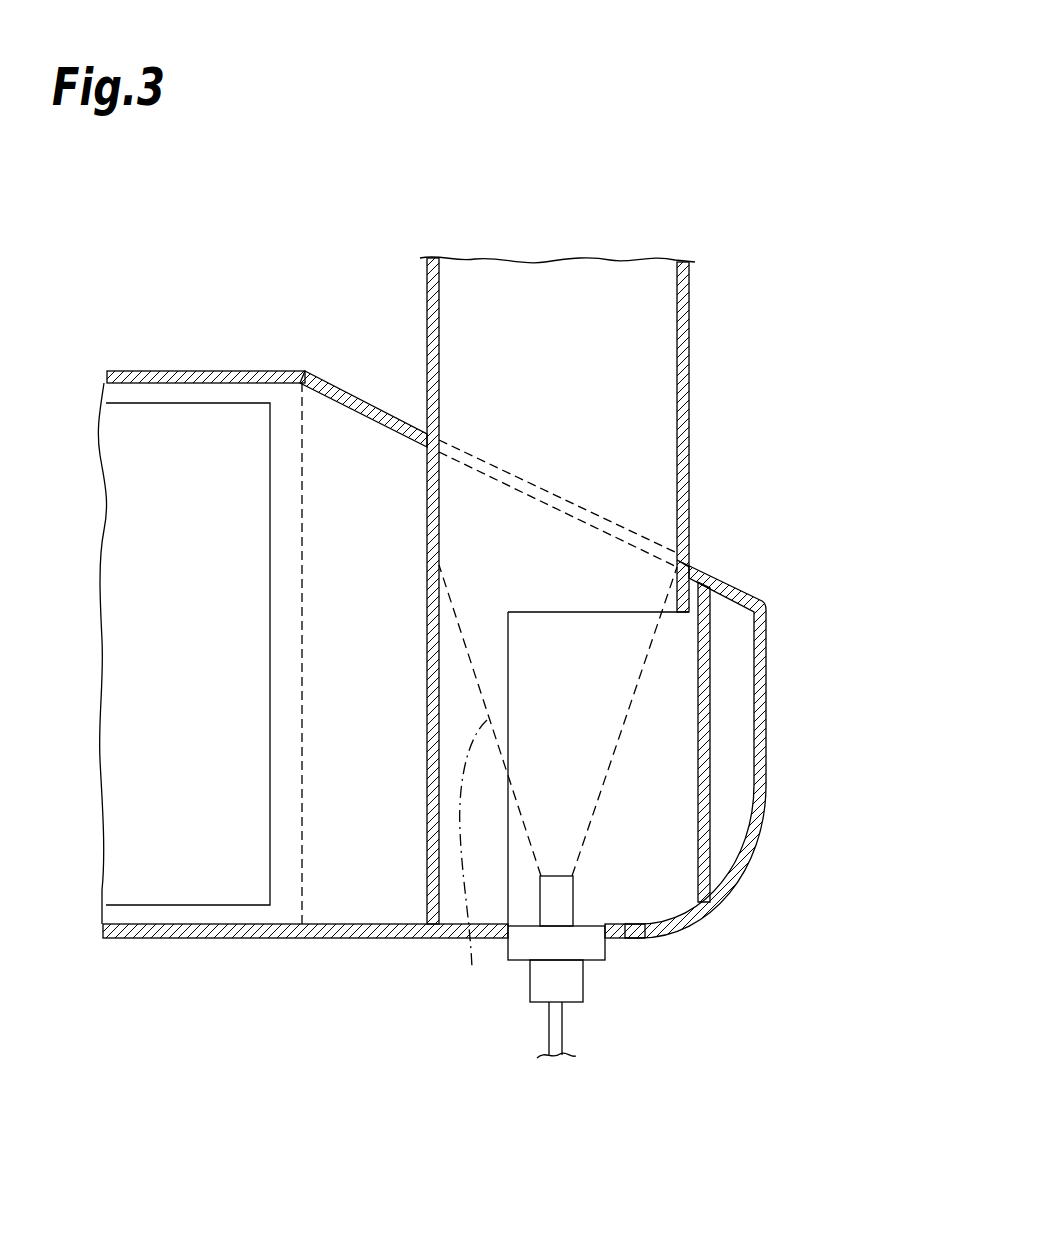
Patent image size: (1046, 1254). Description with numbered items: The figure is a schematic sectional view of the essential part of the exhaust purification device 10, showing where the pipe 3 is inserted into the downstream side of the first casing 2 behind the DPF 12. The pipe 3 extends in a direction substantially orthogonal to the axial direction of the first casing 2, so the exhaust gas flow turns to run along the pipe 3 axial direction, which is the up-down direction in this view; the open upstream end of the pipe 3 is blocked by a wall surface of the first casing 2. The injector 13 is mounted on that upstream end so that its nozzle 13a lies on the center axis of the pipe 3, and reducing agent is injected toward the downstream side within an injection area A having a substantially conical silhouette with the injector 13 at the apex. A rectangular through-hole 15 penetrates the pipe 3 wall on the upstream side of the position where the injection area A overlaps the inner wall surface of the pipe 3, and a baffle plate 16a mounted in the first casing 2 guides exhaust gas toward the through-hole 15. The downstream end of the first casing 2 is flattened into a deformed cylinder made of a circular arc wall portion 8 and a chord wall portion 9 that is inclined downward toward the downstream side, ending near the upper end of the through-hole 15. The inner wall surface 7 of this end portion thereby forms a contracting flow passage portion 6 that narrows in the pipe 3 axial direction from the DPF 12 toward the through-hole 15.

The exhaust purification device 10 is at (731, 201).
The first casing 2 is at (216, 362).
The DPF 12 is at (155, 403).
The chord wall portion 9 is at (340, 392).
The inner wall surface 7 is at (392, 436).
The pipe 3 is at (698, 365).
The contracting flow passage portion 6 is at (392, 667).
The circular arc wall portion 8 is at (349, 939).
The through-hole 15 is at (672, 750).
The baffle plate 16a is at (712, 660).
The nozzle 13a is at (568, 900).
The injector 13 is at (583, 983).
The injection area A is at (473, 867).